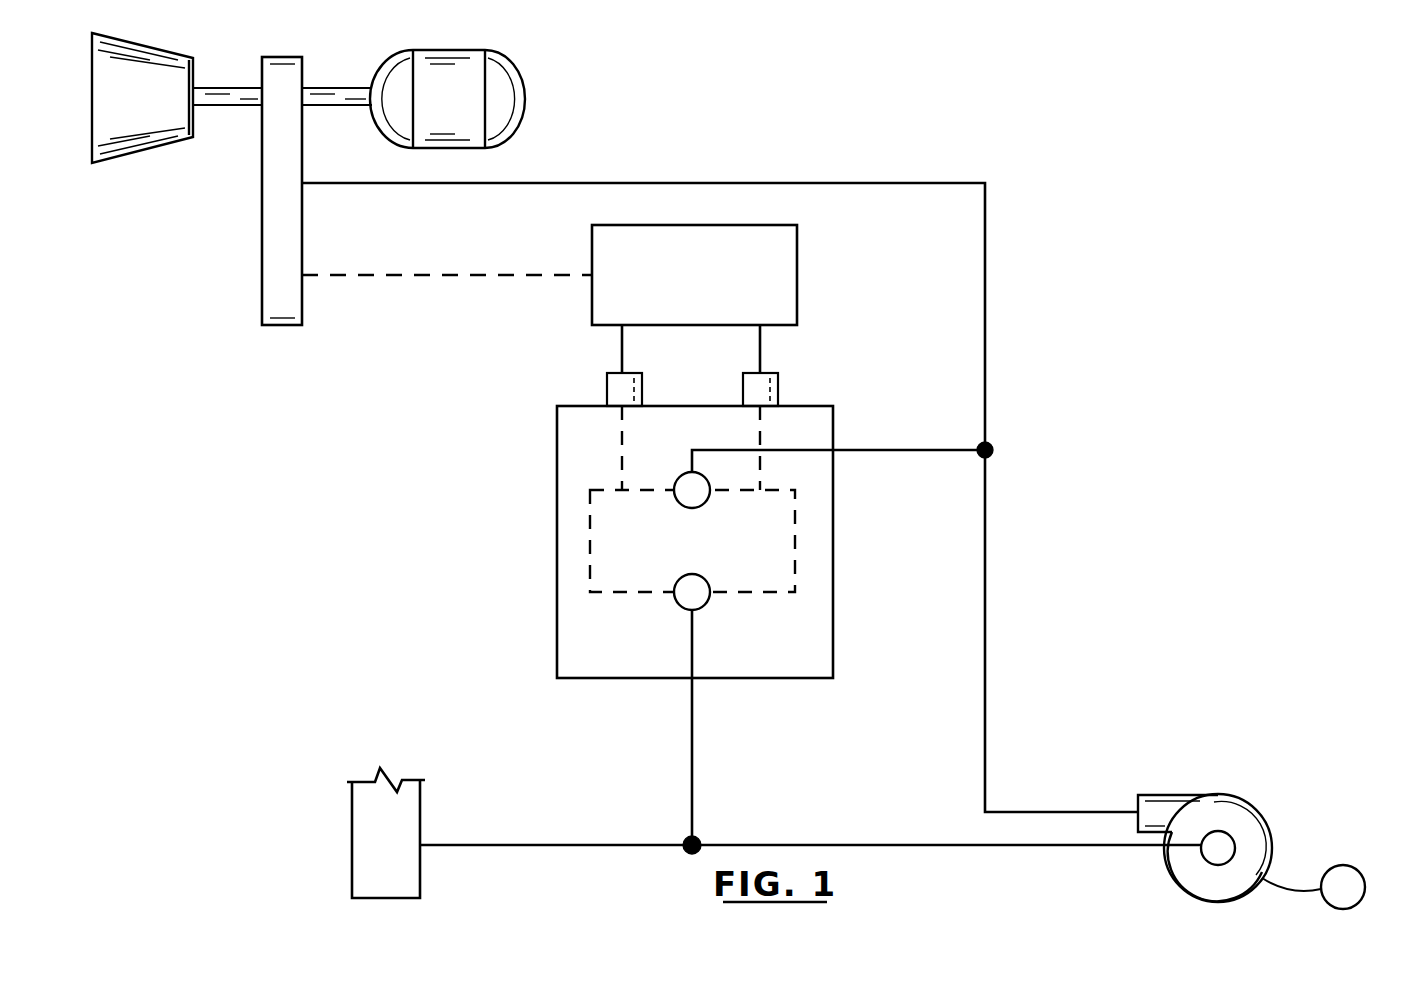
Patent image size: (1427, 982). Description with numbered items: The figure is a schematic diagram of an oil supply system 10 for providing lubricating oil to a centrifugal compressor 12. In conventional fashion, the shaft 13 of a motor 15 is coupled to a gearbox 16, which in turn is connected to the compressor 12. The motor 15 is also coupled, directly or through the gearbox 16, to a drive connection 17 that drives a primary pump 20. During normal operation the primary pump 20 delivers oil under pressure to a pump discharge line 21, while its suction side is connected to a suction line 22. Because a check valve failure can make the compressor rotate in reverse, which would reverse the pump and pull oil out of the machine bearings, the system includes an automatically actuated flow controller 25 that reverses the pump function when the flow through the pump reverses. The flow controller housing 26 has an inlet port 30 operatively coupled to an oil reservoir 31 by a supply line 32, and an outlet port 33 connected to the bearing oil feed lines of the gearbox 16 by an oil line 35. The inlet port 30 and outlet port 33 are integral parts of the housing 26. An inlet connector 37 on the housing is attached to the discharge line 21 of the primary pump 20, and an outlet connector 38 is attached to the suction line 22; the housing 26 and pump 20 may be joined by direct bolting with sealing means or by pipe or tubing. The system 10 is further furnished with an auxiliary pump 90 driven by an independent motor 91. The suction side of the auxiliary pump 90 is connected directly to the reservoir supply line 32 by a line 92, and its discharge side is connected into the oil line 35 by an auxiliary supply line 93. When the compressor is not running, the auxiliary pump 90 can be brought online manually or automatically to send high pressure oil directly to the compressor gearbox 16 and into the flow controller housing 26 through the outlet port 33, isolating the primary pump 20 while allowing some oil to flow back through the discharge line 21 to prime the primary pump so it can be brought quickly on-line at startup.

The oil supply system 10 is at (901, 166).
The centrifugal compressor 12 is at (155, 150).
The shaft 13 is at (308, 88).
The motor 15 is at (523, 83).
The gearbox 16 is at (262, 212).
The drive connection 17 is at (386, 279).
The primary pump 20 is at (798, 232).
The pump discharge line 21 is at (620, 332).
The suction line 22 is at (763, 333).
The flow controller 25 is at (734, 550).
The flow controller housing 26 is at (834, 655).
The inlet port 30 is at (700, 575).
The oil reservoir 31 is at (352, 803).
The supply line 32 is at (695, 760).
The outlet port 33 is at (680, 506).
The oil line 35 is at (620, 183).
The inlet connector 37 is at (605, 385).
The outlet connector 38 is at (780, 381).
The auxiliary pump 90 is at (1198, 796).
The independent motor 91 is at (1350, 866).
The line 92 is at (765, 845).
The auxiliary supply line 93 is at (987, 632).